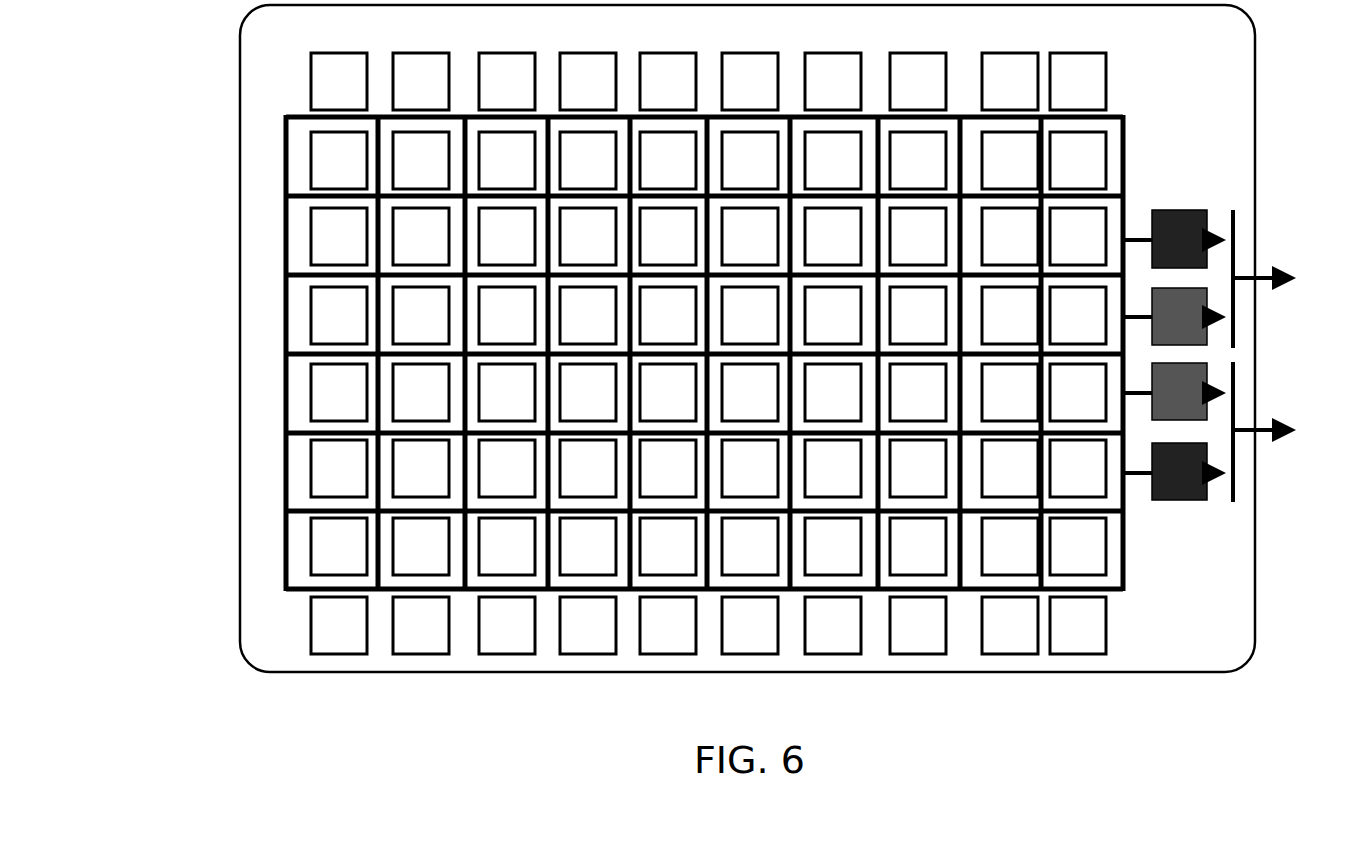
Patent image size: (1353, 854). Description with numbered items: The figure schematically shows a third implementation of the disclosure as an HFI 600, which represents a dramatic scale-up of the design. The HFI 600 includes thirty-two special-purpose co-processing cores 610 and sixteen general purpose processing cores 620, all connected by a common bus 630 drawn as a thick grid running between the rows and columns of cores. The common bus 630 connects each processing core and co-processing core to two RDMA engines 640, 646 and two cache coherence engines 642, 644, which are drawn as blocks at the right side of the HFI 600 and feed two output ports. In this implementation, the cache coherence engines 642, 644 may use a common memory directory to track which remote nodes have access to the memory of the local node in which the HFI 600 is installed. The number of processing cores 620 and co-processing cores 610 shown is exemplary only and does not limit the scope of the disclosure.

The HFI 600 is at (238, 70).
The special-purpose co-processing cores 610 is at (628, 339).
The general purpose processing cores 620 is at (1028, 339).
The common bus 630 is at (1127, 148).
The RDMA engine 640 is at (1180, 212).
The cache coherence engine 642 is at (1180, 290).
The cache coherence engine 644 is at (1180, 365).
The RDMA engine 646 is at (1180, 445).